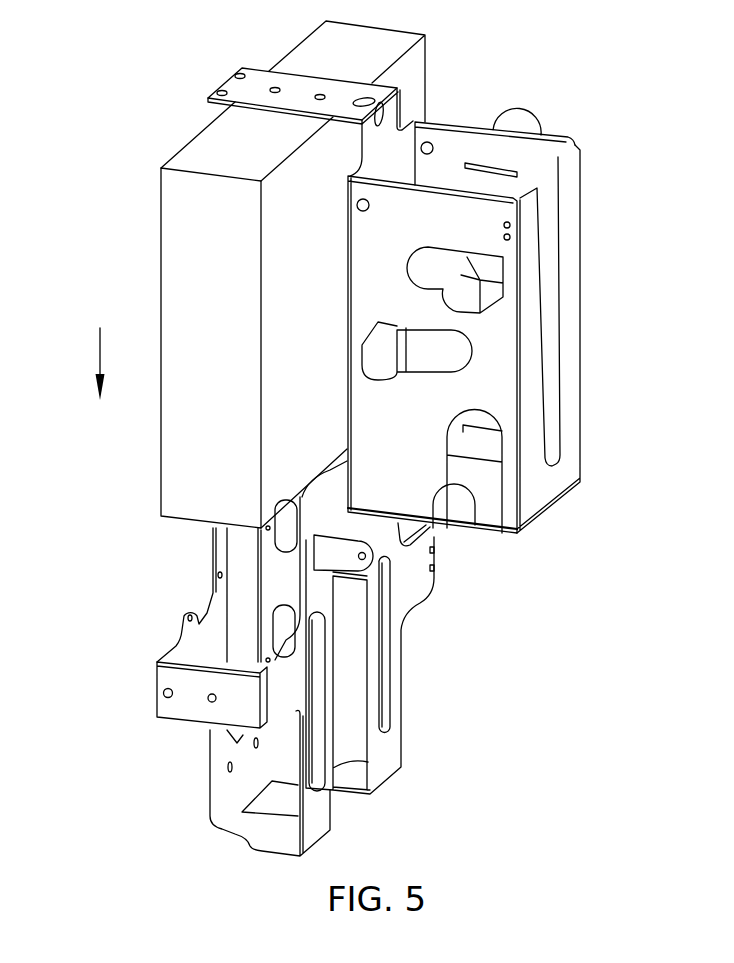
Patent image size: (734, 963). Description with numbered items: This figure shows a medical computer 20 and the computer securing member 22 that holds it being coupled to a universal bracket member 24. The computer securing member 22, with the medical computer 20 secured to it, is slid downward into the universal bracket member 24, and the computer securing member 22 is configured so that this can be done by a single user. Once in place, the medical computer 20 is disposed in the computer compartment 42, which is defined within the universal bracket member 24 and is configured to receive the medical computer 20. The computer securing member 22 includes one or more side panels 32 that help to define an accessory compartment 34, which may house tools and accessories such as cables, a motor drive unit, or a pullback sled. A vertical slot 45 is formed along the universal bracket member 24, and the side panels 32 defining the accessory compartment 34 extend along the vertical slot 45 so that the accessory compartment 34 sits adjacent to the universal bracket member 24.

The medical computer 20 is at (195, 238).
The computer securing member 22 is at (587, 290).
The universal bracket member 24 is at (150, 673).
The side panels 32 is at (407, 432).
The accessory compartment 34 is at (447, 158).
The computer compartment 42 is at (237, 633).
The vertical slot 45 is at (345, 798).